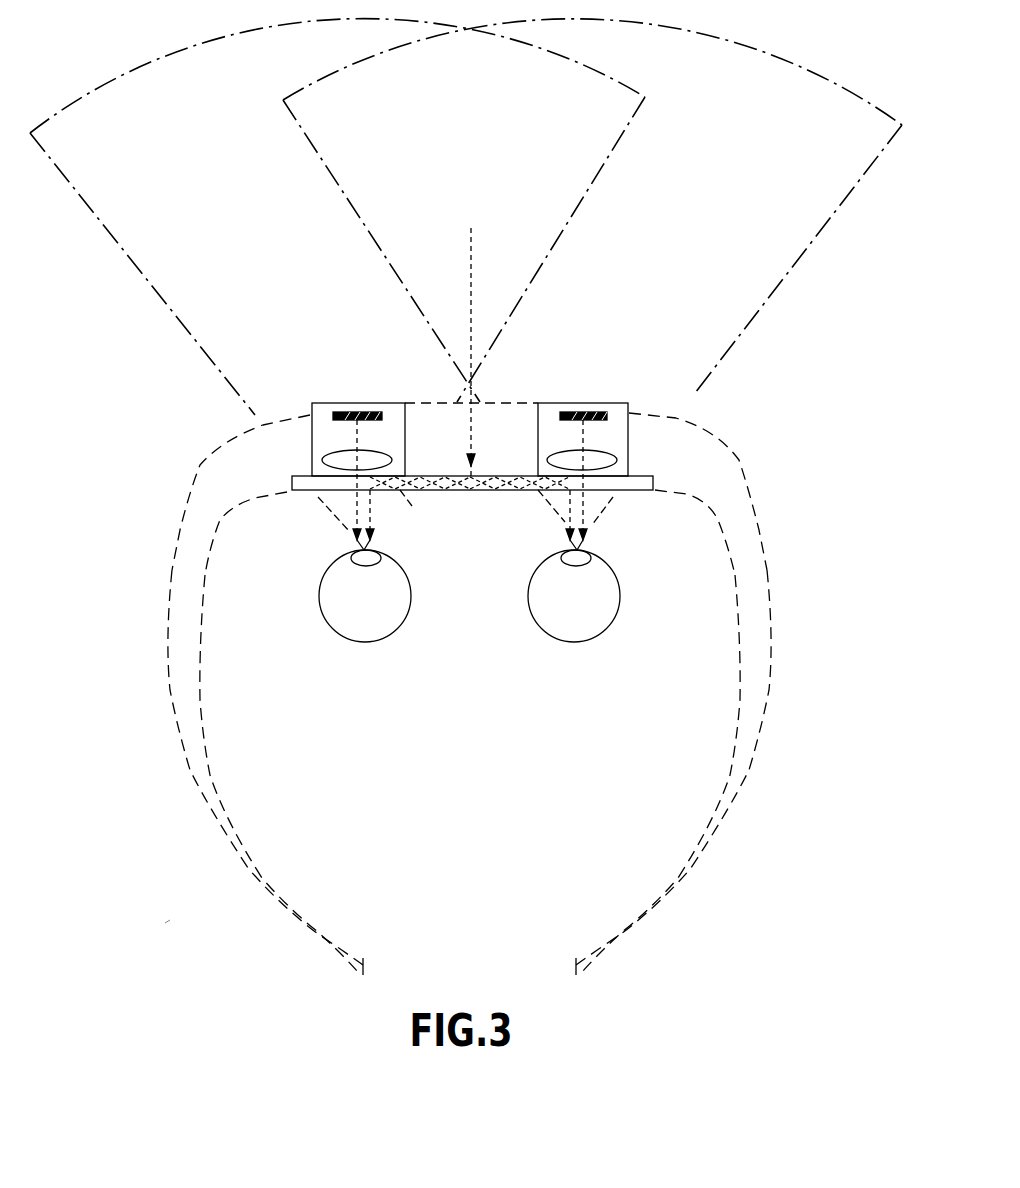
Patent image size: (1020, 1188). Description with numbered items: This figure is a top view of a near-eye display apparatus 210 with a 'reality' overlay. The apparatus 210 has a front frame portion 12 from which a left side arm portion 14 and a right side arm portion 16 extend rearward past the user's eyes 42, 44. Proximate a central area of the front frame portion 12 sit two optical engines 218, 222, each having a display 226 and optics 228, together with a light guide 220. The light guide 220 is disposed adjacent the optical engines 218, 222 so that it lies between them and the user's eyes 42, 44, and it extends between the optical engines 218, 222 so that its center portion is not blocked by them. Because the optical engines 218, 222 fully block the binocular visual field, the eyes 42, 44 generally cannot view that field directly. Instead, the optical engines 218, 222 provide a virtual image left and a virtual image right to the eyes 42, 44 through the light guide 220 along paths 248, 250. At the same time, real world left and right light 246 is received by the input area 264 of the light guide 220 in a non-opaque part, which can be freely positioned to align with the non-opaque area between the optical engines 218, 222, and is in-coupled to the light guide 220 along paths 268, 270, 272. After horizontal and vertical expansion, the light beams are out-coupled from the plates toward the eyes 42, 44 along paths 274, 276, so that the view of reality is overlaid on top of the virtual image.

The front frame portion 12 is at (286, 491).
The left side arm portion 14 is at (213, 786).
The right side arm portion 16 is at (724, 796).
The user's eye 42 is at (386, 641).
The user's eye 44 is at (594, 641).
The apparatus 210 is at (158, 928).
The optical engine 218 is at (405, 430).
The light guide 220 is at (654, 481).
The optical engine 222 is at (628, 440).
The display 226 is at (335, 414).
The optics 228 is at (325, 458).
The real world left and right light 246 is at (557, 56).
The path 248 is at (350, 525).
The path 250 is at (597, 518).
The input area 264 is at (473, 476).
The path 268 is at (471, 272).
The path 270 is at (424, 480).
The path 272 is at (488, 480).
The path 274 is at (372, 522).
The path 276 is at (572, 522).